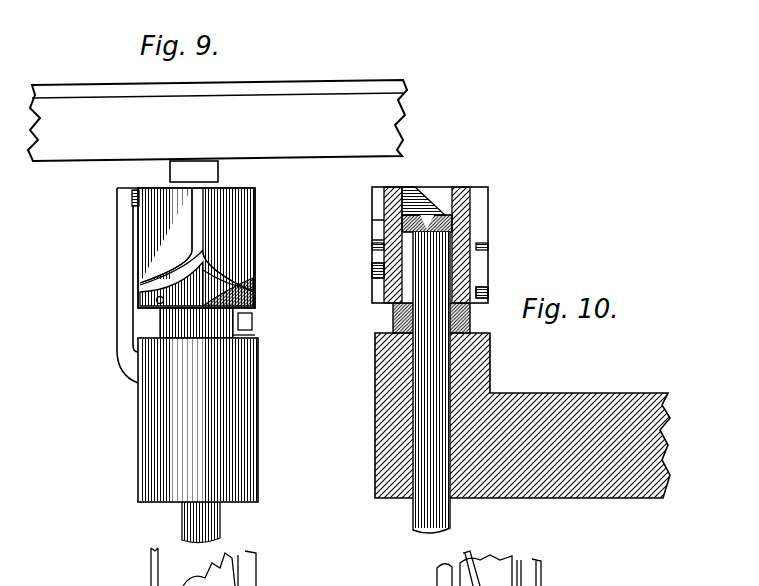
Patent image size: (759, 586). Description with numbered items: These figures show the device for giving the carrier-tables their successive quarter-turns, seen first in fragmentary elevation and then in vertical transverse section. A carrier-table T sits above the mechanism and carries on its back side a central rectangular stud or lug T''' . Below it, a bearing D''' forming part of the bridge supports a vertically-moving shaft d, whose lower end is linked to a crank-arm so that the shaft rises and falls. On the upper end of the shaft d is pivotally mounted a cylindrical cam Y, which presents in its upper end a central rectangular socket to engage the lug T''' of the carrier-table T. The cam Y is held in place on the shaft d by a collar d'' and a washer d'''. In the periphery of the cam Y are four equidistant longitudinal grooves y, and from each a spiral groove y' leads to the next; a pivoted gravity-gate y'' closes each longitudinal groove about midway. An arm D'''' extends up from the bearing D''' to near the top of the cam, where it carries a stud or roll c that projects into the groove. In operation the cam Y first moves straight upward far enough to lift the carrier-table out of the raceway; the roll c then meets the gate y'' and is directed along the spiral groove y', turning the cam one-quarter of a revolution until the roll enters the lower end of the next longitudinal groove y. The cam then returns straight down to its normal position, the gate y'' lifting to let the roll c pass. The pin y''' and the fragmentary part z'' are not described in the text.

In FIG. 9, the carrier-table T is at (217, 120).
In FIG. 9, the rectangular stud or lug T''' is at (207, 172).
In FIG. 9, the cylindrical cam Y is at (255, 220).
In FIG. 10, the cylindrical cam Y is at (488, 225).
In FIG. 9, the longitudinal groove y is at (181, 219).
In FIG. 10, the longitudinal groove y is at (368, 229).
In FIG. 9, the spiral groove y' is at (166, 266).
In FIG. 10, the spiral groove y' is at (446, 163).
In FIG. 9, the pivoted gravity-gate y'' is at (237, 272).
In FIG. 10, the pivoted gravity-gate y'' is at (427, 273).
In FIG. 9, the pin y''' is at (173, 297).
In FIG. 9, the stud or roll c is at (132, 200).
In FIG. 9, the arm D'''' is at (99, 285).
In FIG. 9, the collar d'' is at (218, 323).
In FIG. 10, the collar d'' is at (411, 318).
In FIG. 9, the bearing D''' is at (212, 420).
In FIG. 10, the bearing D''' is at (522, 415).
In FIG. 9, the vertically-moving shaft d is at (211, 522).
In FIG. 10, the vertically-moving shaft d is at (420, 382).
In FIG. 10, the washer d''' is at (432, 199).
In FIG. 10, the fragment z'' is at (489, 568).